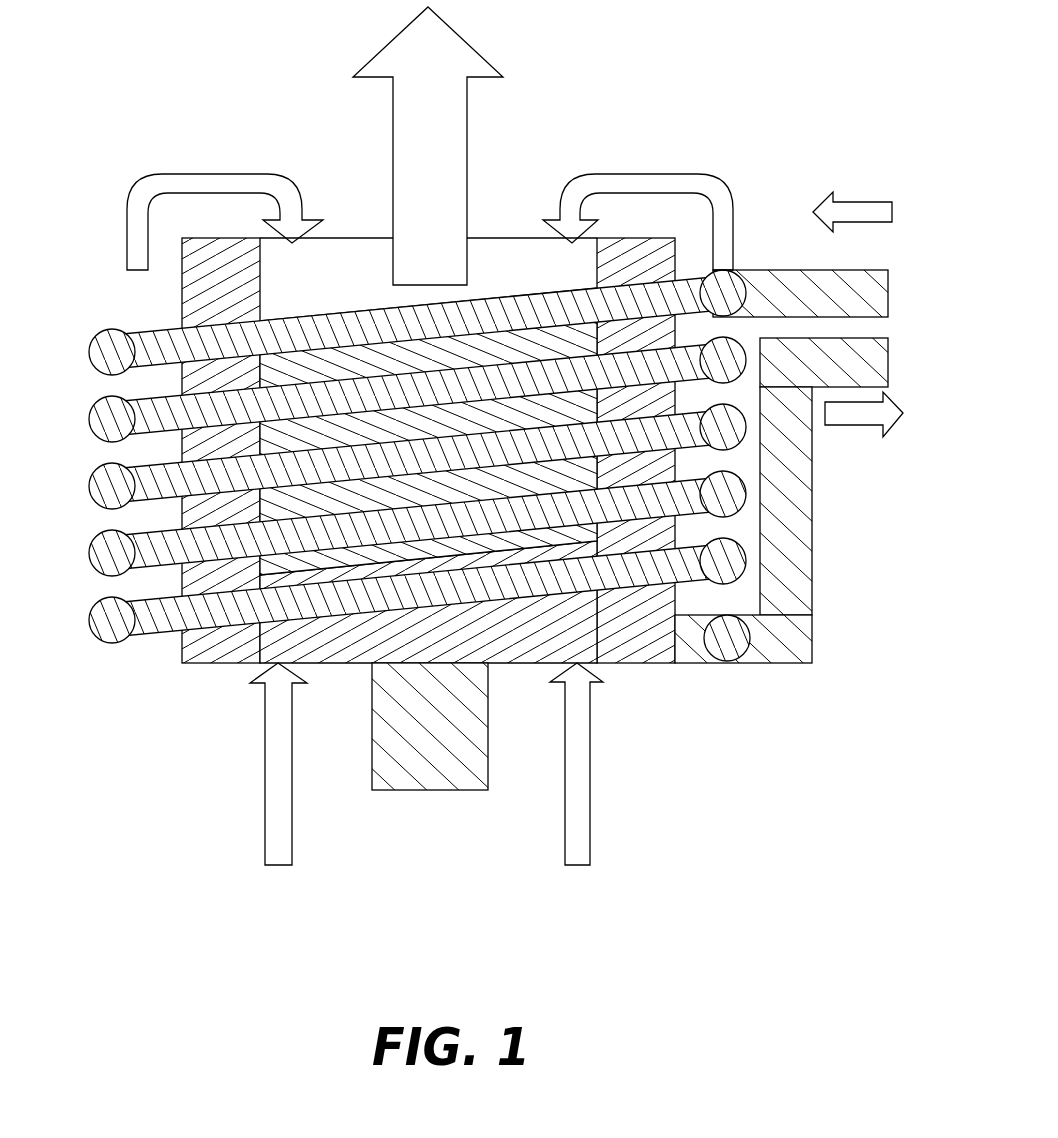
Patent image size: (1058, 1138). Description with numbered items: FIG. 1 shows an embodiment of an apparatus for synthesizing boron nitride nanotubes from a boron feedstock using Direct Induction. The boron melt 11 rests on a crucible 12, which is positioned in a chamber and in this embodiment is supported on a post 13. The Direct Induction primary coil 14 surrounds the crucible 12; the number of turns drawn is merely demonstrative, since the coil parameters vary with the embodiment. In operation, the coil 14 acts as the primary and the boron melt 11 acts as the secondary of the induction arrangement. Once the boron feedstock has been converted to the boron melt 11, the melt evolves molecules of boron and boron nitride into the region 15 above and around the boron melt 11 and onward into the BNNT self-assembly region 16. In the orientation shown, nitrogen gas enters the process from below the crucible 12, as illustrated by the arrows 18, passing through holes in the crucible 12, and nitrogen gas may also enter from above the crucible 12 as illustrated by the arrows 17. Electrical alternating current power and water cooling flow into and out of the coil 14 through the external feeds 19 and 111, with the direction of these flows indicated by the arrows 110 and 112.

The boron melt 11 is at (400, 497).
The crucible 12 is at (200, 664).
The post 13 is at (443, 790).
The Direct Induction primary coil 14 is at (110, 647).
The region above and around boron melt 15 is at (350, 262).
The BNNT self-assembly region 16 is at (465, 38).
The arrows indicating nitrogen gas entering from above the crucible 17 is at (182, 174).
The arrows indicating nitrogen gas entering from below the crucible 18 is at (265, 832).
The external feed 19 is at (785, 270).
The arrow indicating flow at external feed 110 is at (858, 200).
The external feed 111 is at (890, 358).
The arrow indicating flow at external feed 112 is at (855, 425).